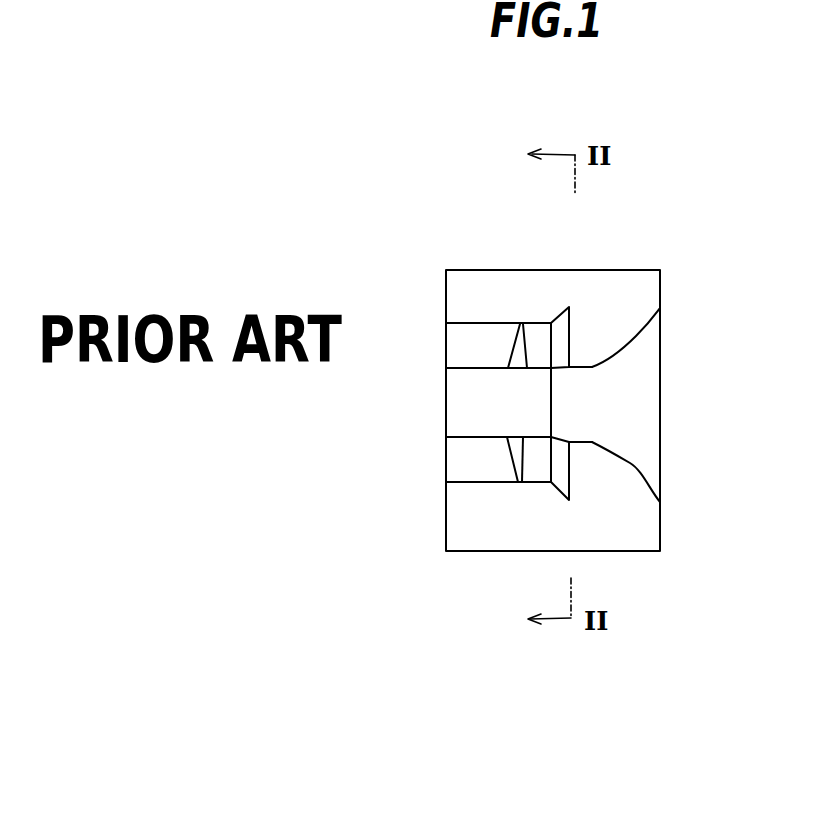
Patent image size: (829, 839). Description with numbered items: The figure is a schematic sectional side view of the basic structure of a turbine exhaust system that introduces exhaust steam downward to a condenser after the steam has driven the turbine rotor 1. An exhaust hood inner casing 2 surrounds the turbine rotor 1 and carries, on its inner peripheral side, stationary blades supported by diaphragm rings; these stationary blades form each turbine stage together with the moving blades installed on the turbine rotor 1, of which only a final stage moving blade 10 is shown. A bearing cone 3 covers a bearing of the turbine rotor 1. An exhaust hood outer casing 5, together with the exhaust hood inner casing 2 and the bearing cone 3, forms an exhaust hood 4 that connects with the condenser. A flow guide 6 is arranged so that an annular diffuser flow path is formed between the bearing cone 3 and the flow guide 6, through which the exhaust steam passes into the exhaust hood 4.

The turbine rotor 1 is at (481, 355).
The exhaust hood inner casing 2 is at (458, 322).
The bearing cone 3 is at (645, 322).
The exhaust hood 4 is at (636, 518).
The exhaust hood outer casing 5 is at (472, 270).
The flow guide 6 is at (558, 307).
The final stage moving blade 10 is at (520, 324).